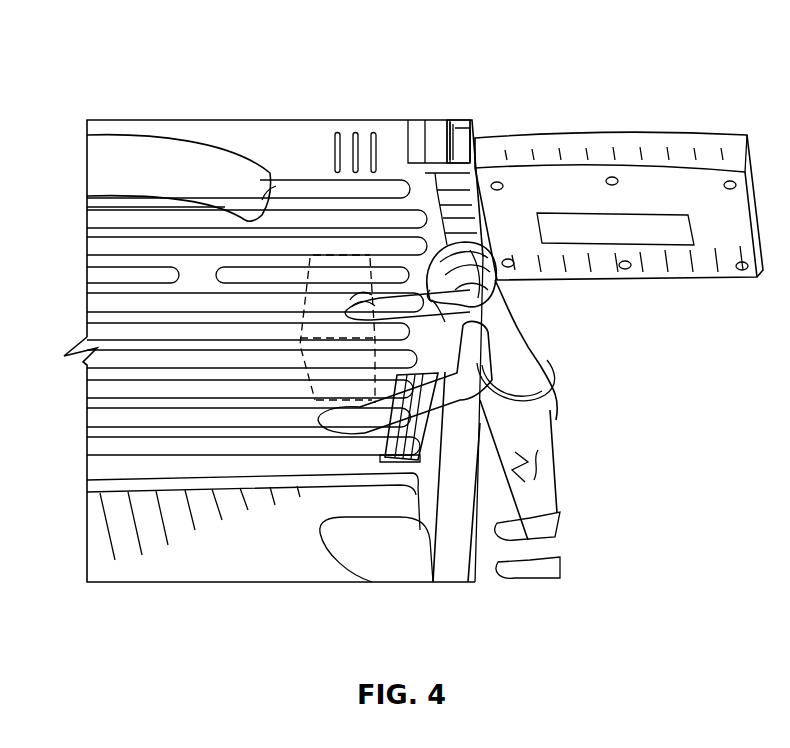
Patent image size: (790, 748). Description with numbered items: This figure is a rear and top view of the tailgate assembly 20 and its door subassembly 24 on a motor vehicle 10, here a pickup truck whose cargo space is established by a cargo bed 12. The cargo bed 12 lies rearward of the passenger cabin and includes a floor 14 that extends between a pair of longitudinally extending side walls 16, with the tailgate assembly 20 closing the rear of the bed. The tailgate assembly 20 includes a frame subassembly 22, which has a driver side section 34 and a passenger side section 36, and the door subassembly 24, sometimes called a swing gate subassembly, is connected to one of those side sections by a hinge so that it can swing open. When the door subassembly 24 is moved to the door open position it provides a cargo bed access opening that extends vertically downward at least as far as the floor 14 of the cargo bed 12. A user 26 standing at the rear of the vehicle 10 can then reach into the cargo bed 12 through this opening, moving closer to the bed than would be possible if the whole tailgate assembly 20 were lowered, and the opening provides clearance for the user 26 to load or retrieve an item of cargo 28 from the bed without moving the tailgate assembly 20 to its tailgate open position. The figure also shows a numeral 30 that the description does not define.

The motor vehicle 10 is at (98, 56).
The cargo bed 12 is at (285, 210).
The floor 14 is at (100, 390).
The side walls 16 is at (330, 118).
The tailgate assembly 20 is at (459, 116).
The frame subassembly 22 is at (455, 128).
The door subassembly 24 is at (688, 137).
The user 26 is at (542, 382).
The item of cargo 28 is at (345, 272).
The cargo box 30 is at (452, 221).
The driver side section 34 is at (447, 470).
The passenger side section 36 is at (470, 135).